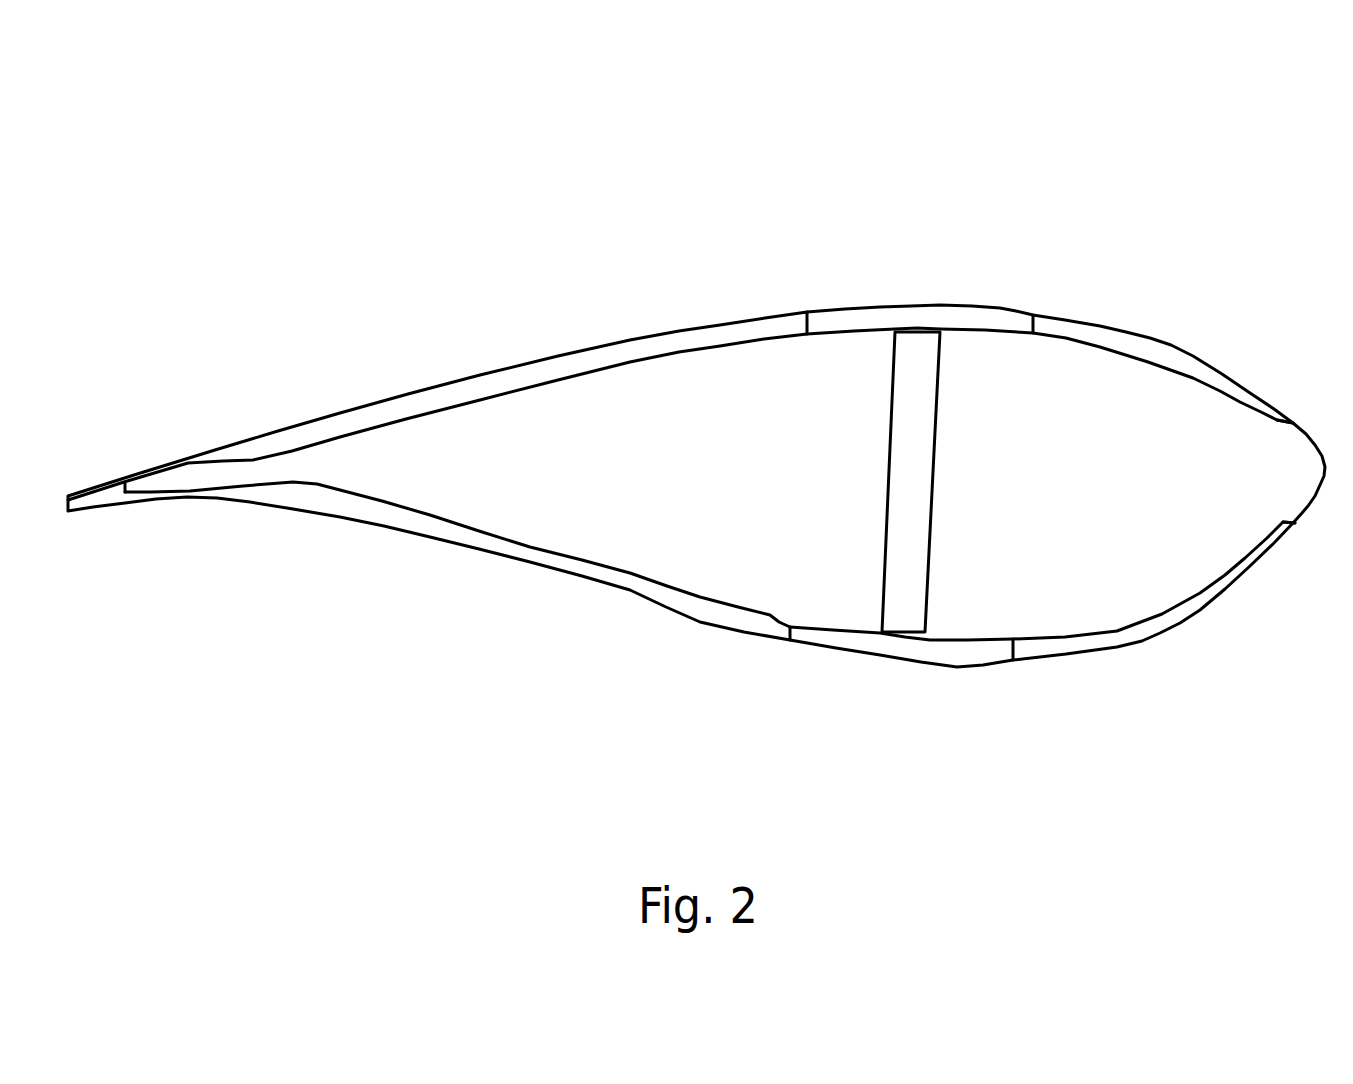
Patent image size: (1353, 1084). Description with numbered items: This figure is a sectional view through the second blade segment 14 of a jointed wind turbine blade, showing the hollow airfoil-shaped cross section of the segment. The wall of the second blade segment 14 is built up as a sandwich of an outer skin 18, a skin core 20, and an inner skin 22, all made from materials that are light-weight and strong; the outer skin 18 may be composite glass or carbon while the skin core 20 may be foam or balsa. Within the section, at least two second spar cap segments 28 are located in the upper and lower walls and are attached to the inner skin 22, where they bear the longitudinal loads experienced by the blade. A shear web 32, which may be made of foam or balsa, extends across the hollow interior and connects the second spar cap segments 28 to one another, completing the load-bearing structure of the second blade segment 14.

The second blade segment 14 is at (1076, 137).
The outer skin 18 is at (1200, 340).
The skin core 20 is at (670, 343).
The inner skin 22 is at (1232, 365).
The second spar cap segments 28 is at (993, 318).
The shear web 32 is at (918, 350).